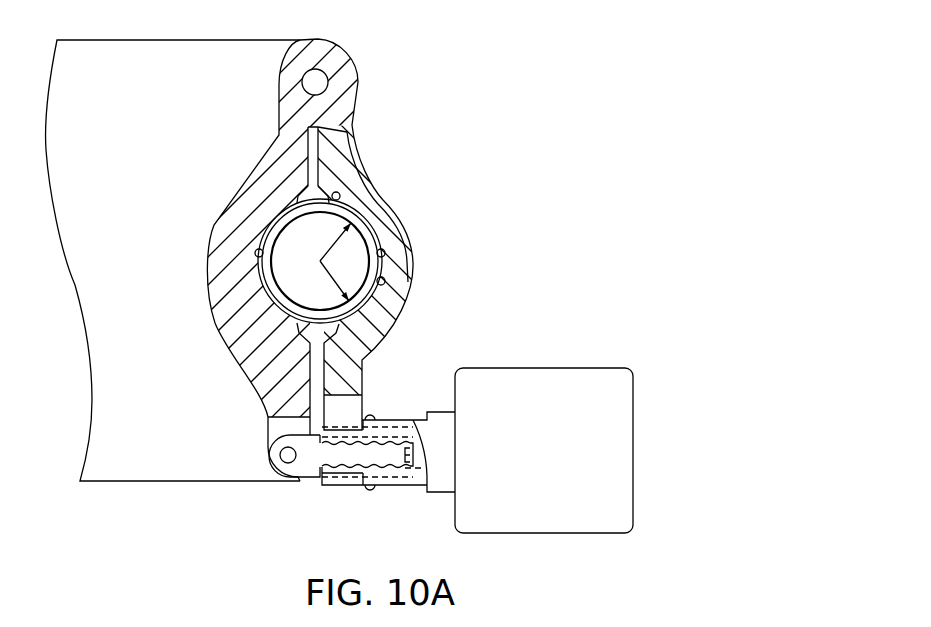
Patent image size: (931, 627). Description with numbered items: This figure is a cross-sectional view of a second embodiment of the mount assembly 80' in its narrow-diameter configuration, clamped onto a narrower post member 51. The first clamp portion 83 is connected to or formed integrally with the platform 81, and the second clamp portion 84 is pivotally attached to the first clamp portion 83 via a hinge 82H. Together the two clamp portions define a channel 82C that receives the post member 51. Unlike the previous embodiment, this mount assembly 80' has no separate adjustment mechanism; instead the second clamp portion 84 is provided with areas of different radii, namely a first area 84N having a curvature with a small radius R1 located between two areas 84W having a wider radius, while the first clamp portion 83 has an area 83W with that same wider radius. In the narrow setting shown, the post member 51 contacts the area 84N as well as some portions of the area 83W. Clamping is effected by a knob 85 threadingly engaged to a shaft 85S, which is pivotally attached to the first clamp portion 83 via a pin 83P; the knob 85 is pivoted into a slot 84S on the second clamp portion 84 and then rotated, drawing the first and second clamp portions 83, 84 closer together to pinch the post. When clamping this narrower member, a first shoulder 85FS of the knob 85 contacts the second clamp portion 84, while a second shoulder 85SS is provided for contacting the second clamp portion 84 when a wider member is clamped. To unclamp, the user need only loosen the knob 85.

The platform 81 is at (178, 52).
The mount assembly 80' is at (337, 260).
The channel 82C is at (247, 362).
The hinge 82H is at (308, 82).
The second clamp portion 84 is at (395, 216).
The area having wider radius R2 84W is at (366, 188).
The post member 51 is at (373, 243).
The area having small radius R1 84N is at (405, 253).
The area having wider radius R2 83W is at (257, 256).
The small radius R1 is at (320, 261).
The first clamp portion 83 is at (270, 390).
The pin 83P is at (275, 454).
The slot 84S is at (350, 410).
The knob 85 is at (547, 380).
The shaft 85S is at (343, 462).
The first shoulder 85FS is at (372, 494).
The second shoulder 85SS is at (441, 494).